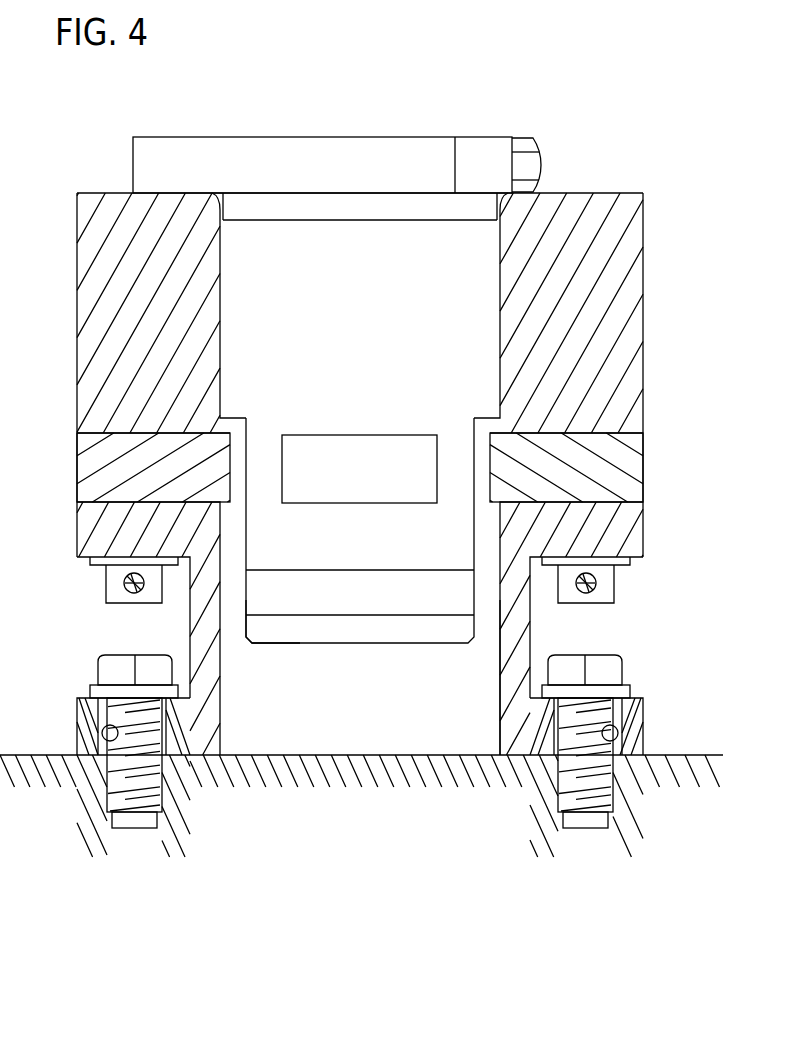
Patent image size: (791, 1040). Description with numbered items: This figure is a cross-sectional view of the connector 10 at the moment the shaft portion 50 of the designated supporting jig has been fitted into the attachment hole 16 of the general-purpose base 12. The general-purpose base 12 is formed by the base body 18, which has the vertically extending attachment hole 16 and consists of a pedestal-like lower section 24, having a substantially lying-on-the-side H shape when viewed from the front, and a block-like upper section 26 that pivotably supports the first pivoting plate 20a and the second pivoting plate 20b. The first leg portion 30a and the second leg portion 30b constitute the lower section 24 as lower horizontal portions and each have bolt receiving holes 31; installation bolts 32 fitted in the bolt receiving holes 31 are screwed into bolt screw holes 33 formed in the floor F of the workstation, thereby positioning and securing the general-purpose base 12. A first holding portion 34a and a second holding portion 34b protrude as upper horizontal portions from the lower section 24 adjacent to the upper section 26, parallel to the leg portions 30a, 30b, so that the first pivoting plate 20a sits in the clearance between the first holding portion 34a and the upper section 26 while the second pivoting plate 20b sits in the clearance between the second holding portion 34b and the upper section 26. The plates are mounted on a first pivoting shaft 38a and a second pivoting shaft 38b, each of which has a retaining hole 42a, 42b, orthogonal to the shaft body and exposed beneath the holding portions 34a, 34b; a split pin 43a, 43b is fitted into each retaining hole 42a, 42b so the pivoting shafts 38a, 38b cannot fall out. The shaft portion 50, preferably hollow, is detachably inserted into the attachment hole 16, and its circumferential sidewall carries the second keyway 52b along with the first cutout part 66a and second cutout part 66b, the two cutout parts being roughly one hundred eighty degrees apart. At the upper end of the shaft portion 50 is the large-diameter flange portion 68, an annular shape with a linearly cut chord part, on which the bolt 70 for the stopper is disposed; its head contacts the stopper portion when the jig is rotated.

The connector 10 is at (640, 76).
The general-purpose base 12 is at (650, 228).
The attachment hole 16 is at (222, 303).
The base body 18 is at (617, 192).
The first pivoting plate 20a is at (636, 472).
The second pivoting plate 20b is at (85, 470).
The pedestal-like lower section 24 is at (516, 673).
The block-like upper section 26 is at (640, 292).
The first leg portion 30a is at (636, 732).
The second leg portion 30b is at (86, 738).
The bolt receiving hole 31 is at (112, 734).
The installation bolt 32 is at (106, 668).
The bolt screw hole 33 is at (118, 822).
The first holding portion 34a is at (632, 538).
The second holding portion 34b is at (88, 543).
The first pivoting shaft 38a is at (608, 585).
The second pivoting shaft 38b is at (112, 585).
The retaining hole 42a is at (582, 592).
The retaining hole 42b is at (139, 592).
The split pin 43a is at (592, 592).
The split pin 43b is at (129, 592).
The shaft portion 50 is at (370, 230).
The second keyway 52b is at (348, 452).
The first cutout part 66a is at (474, 602).
The second cutout part 66b is at (246, 600).
The flange portion 68 is at (295, 148).
The bolt for stopper 70 is at (541, 160).
The floor F is at (360, 762).